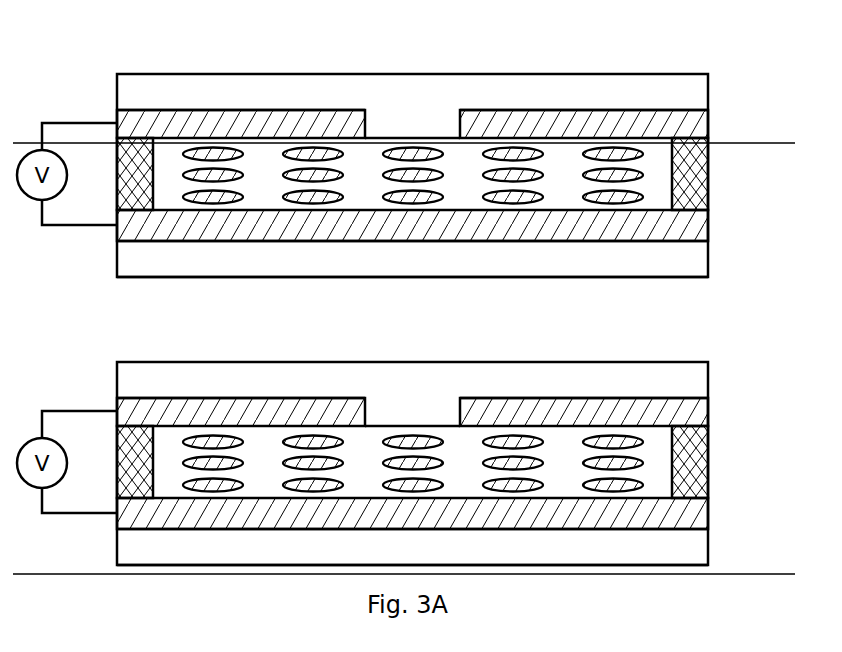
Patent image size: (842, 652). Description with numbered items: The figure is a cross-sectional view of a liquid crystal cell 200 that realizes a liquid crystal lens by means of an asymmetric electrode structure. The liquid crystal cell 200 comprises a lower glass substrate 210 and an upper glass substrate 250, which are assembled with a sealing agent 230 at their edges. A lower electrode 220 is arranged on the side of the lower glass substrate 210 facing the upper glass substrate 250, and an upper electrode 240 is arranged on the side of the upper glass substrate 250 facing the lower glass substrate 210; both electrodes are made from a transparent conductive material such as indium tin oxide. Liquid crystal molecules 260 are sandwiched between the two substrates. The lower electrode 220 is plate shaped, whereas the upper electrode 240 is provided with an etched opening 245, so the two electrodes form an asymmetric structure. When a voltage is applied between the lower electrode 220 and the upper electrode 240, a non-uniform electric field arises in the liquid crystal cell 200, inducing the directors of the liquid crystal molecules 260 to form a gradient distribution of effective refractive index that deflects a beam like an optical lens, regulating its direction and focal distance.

The liquid crystal cell 200 is at (157, 44).
The lower glass substrate 210 is at (709, 258).
The lower electrode 220 is at (709, 225).
The sealing agent 230 is at (709, 177).
The upper electrode 240 is at (709, 122).
The opening 245 is at (413, 125).
The upper glass substrate 250 is at (709, 91).
The liquid crystal molecules 260 is at (513, 438).